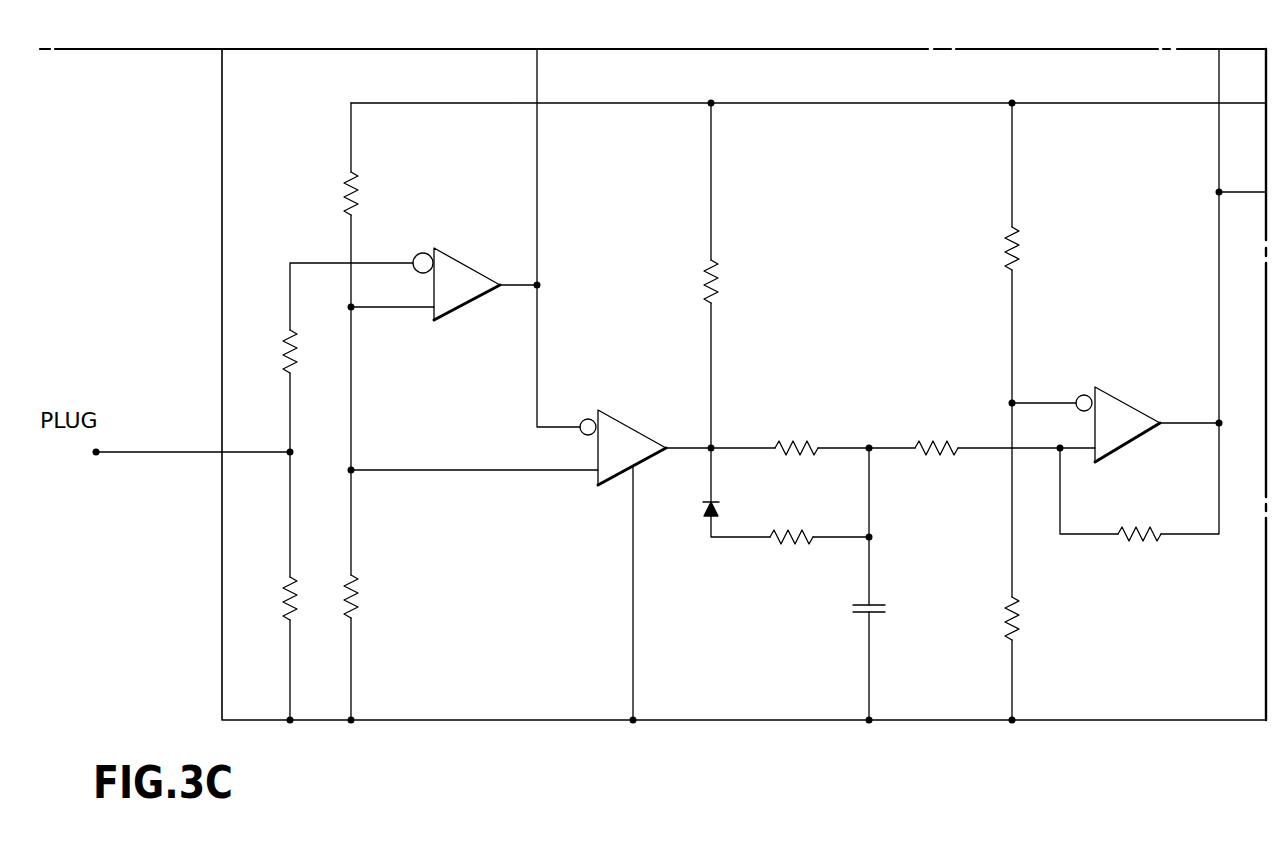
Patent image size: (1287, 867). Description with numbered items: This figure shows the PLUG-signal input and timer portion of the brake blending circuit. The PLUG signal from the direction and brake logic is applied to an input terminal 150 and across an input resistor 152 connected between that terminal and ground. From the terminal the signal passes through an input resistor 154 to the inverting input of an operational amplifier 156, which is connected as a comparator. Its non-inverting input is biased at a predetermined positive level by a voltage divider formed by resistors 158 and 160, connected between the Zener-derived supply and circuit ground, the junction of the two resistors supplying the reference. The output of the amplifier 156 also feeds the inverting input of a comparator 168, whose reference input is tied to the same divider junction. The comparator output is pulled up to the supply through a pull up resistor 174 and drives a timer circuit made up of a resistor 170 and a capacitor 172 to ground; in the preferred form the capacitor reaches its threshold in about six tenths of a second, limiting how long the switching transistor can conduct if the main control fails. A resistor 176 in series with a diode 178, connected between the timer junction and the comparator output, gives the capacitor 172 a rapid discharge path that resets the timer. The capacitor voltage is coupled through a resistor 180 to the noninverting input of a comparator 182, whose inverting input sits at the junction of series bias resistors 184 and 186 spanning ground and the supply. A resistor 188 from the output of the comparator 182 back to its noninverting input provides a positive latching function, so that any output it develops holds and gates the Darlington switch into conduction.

The input terminal 150 is at (99, 456).
The input resistor 152 is at (282, 603).
The input resistor 154 is at (281, 354).
The operational amplifier 156 is at (458, 266).
The resistor 158 is at (367, 196).
The resistor 160 is at (362, 596).
The comparator 168 is at (628, 430).
The resistor 170 is at (800, 441).
The capacitor 172 is at (851, 612).
The pull up resistor 174 is at (728, 282).
The resistor 176 is at (788, 544).
The diode 178 is at (725, 512).
The resistor 180 is at (936, 441).
The comparator 182 is at (1136, 406).
The bias resistor 184 is at (1025, 250).
The bias resistor 186 is at (996, 618).
The resistor 188 is at (1138, 550).